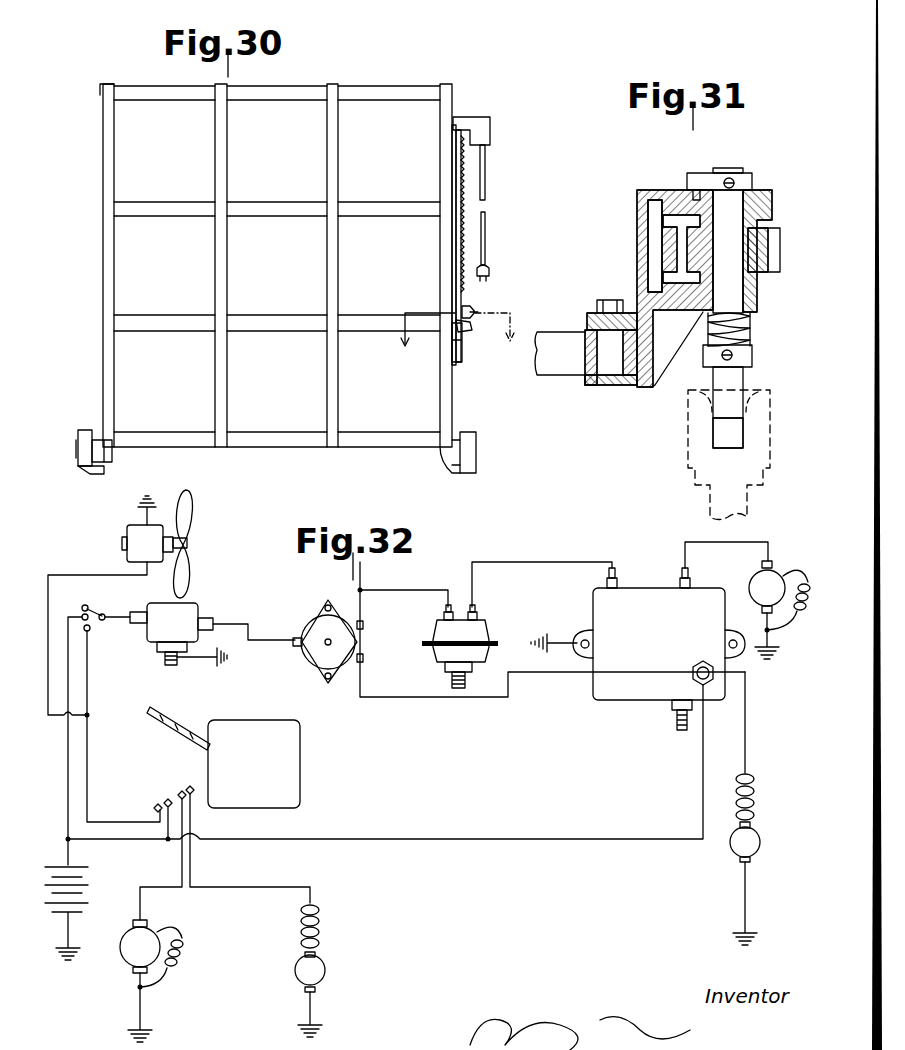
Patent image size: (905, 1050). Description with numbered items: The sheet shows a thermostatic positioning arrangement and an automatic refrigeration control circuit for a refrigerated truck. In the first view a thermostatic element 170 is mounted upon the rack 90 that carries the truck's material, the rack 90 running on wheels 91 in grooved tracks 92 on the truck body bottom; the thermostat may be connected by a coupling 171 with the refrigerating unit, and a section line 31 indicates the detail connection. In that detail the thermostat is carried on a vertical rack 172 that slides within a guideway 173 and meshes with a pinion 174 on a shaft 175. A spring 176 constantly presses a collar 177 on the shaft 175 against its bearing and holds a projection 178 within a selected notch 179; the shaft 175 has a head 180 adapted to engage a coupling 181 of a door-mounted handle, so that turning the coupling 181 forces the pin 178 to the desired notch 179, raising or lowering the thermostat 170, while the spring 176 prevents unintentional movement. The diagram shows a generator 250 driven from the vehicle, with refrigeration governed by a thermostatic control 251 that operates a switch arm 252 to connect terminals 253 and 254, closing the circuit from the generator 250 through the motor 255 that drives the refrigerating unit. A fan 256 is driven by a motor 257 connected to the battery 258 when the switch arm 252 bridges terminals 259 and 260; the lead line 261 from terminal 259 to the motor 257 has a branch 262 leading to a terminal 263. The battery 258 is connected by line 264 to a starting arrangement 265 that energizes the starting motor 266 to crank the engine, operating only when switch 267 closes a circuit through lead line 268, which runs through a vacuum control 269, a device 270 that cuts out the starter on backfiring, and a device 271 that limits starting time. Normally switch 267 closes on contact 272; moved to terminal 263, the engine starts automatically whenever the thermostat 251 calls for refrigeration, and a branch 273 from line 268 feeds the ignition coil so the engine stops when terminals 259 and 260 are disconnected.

In FIG. 30, the rack 90 is at (108, 175).
In FIG. 31, the rack 90 is at (603, 387).
In FIG. 30, the wheels 91 is at (85, 430).
In FIG. 30, the grooved tracks 92 is at (84, 470).
In FIG. 30, the thermostatic element 170 is at (490, 130).
In FIG. 30, the coupling 171 is at (489, 270).
In FIG. 30, the vertical rack 172 is at (458, 168).
In FIG. 31, the vertical rack 172 is at (655, 200).
In FIG. 30, the guideway 173 is at (458, 346).
In FIG. 31, the guideway 173 is at (640, 226).
In FIG. 30, the pinion 174 is at (462, 322).
In FIG. 31, the pinion 174 is at (775, 245).
In FIG. 31, the shaft 175 is at (735, 298).
In FIG. 31, the spring 176 is at (752, 336).
In FIG. 31, the collar 177 is at (708, 173).
In FIG. 31, the projection 178 is at (697, 190).
In FIG. 31, the notch 179 is at (760, 190).
In FIG. 30, the head 180 is at (474, 306).
In FIG. 31, the head 180 is at (723, 435).
In FIG. 31, the coupling 181 is at (770, 470).
In FIG. 30, the section line 31 is at (460, 318).
In FIG. 32, the generator 250 is at (128, 955).
In FIG. 32, the thermostatic control 251 is at (302, 790).
In FIG. 32, the switch arm 252 is at (183, 720).
In FIG. 32, the terminal 253 is at (225, 844).
In FIG. 32, the terminal 254 is at (196, 792).
In FIG. 32, the motor 255 is at (325, 966).
In FIG. 32, the fan 256 is at (192, 515).
In FIG. 32, the motor 257 is at (140, 528).
In FIG. 32, the battery 258 is at (82, 866).
In FIG. 32, the terminal 259 is at (155, 808).
In FIG. 32, the terminal 260 is at (163, 800).
In FIG. 32, the lead line 261 is at (88, 735).
In FIG. 32, the branch 262 is at (89, 668).
In FIG. 32, the terminal 263 is at (90, 631).
In FIG. 32, the line 264 is at (600, 845).
In FIG. 32, the starting arrangement 265 is at (653, 688).
In FIG. 32, the starting motor 266 is at (757, 835).
In FIG. 32, the switch 267 is at (95, 611).
In FIG. 32, the lead line 268 is at (557, 562).
In FIG. 32, the vacuum control 269 is at (482, 630).
In FIG. 32, the device 270 is at (315, 648).
In FIG. 32, the device 271 is at (185, 612).
In FIG. 32, the contact 272 is at (82, 612).
In FIG. 32, the branch 273 is at (365, 584).